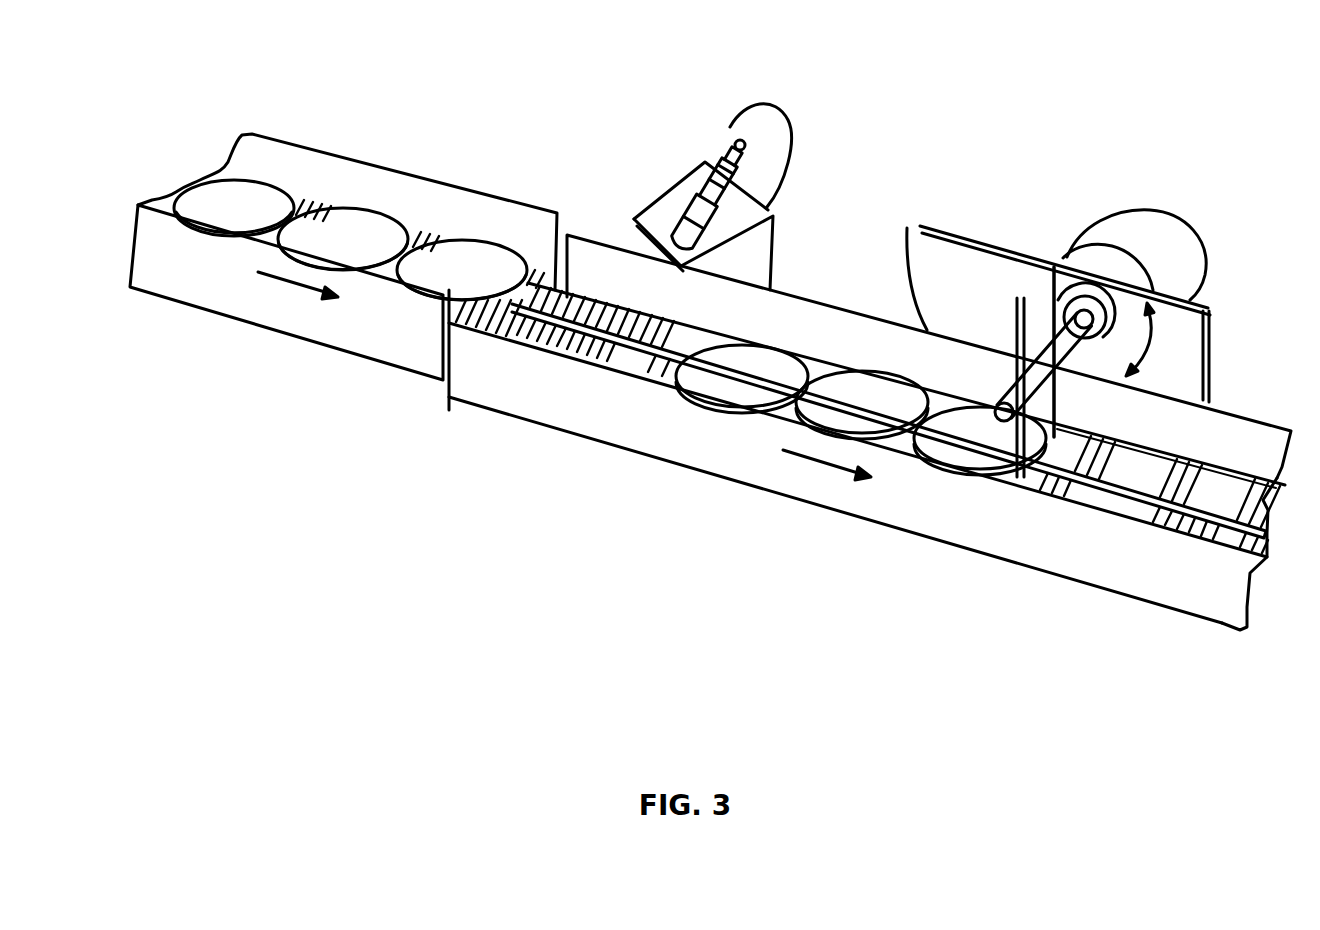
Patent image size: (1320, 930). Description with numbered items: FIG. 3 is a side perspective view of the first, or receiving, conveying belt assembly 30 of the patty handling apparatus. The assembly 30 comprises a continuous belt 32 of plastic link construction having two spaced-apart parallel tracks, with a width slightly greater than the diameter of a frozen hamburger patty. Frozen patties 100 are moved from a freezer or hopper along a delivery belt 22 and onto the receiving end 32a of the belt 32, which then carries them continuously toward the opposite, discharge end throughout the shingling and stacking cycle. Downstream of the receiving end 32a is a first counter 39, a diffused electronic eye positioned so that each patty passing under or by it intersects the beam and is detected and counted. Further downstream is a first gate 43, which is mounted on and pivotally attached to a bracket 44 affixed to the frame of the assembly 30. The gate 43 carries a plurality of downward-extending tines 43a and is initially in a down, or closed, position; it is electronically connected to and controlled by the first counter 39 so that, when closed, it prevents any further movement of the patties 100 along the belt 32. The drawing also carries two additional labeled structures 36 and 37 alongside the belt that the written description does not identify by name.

The delivery belt 22 is at (307, 203).
The first conveying belt assembly 30 is at (897, 184).
The belt 32 is at (1160, 463).
The receiving end 32a is at (510, 316).
The front side wall 36 is at (608, 442).
The back side wall 37 is at (795, 310).
The first counter 39 is at (685, 217).
The first gate 43 is at (1035, 300).
The tines 43a is at (1057, 424).
The bracket 44 is at (1180, 327).
The frozen patties 100 is at (247, 192).